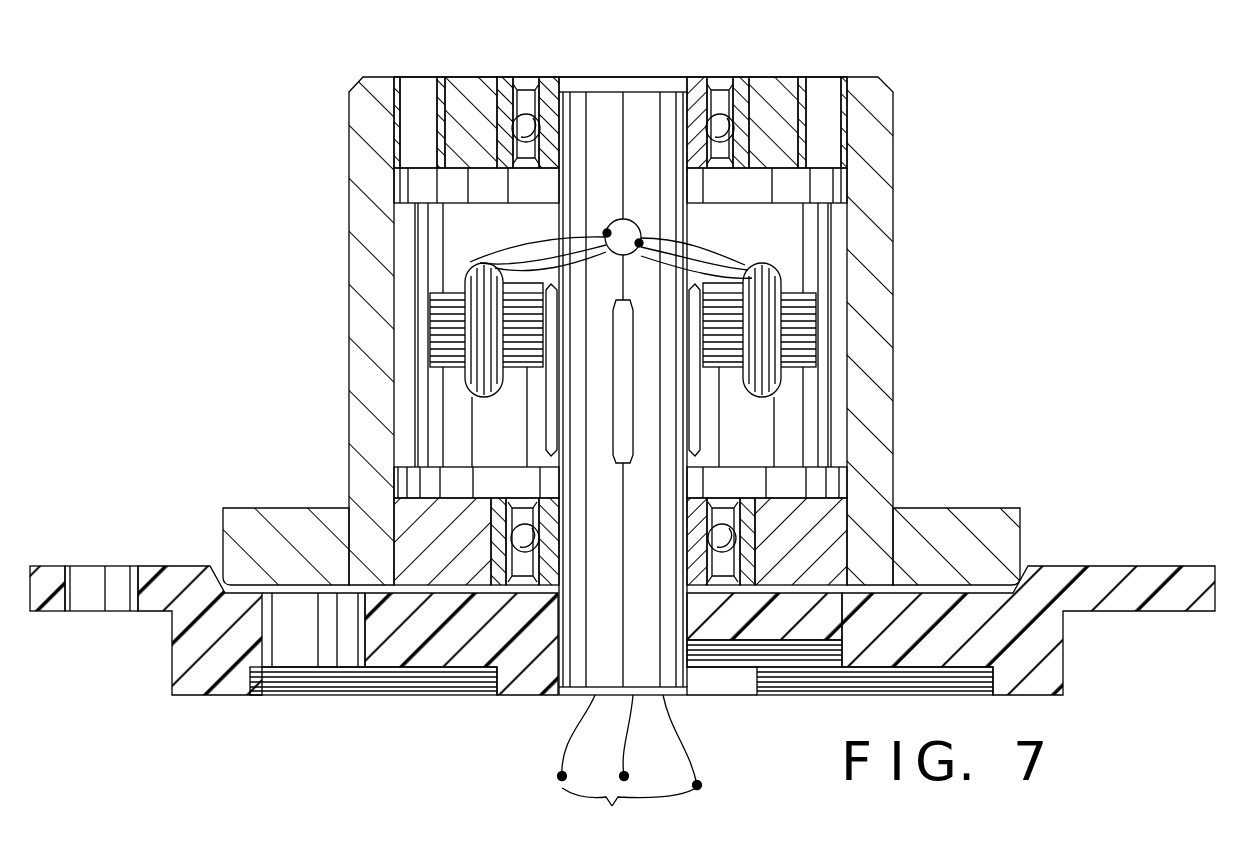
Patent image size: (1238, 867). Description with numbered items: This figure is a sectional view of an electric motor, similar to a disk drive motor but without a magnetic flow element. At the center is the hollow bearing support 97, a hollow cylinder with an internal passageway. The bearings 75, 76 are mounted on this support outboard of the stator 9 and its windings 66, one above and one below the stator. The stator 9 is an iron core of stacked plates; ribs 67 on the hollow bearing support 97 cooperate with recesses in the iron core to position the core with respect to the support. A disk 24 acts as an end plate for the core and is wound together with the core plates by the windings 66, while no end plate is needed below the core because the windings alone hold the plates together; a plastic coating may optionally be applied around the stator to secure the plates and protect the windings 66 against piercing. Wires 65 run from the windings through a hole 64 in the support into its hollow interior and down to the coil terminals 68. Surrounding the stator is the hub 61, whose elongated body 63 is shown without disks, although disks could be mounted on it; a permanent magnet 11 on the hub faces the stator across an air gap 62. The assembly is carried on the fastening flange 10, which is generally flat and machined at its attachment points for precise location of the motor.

The stator 9 is at (446, 326).
The fastening flange 10 is at (1030, 652).
The permanent magnet 11 is at (843, 313).
The disk 24 is at (701, 280).
The hub 61 is at (621, 331).
The air gap 62 is at (822, 357).
The elongated body 63 is at (870, 253).
The hole 64 is at (630, 219).
The wires 65 is at (540, 236).
The windings 66 is at (470, 263).
The ribs 67 is at (556, 406).
The coil terminals 68 is at (630, 765).
The bearing 75 is at (712, 82).
The bearing 76 is at (733, 582).
The hollow bearing support 97 is at (663, 662).